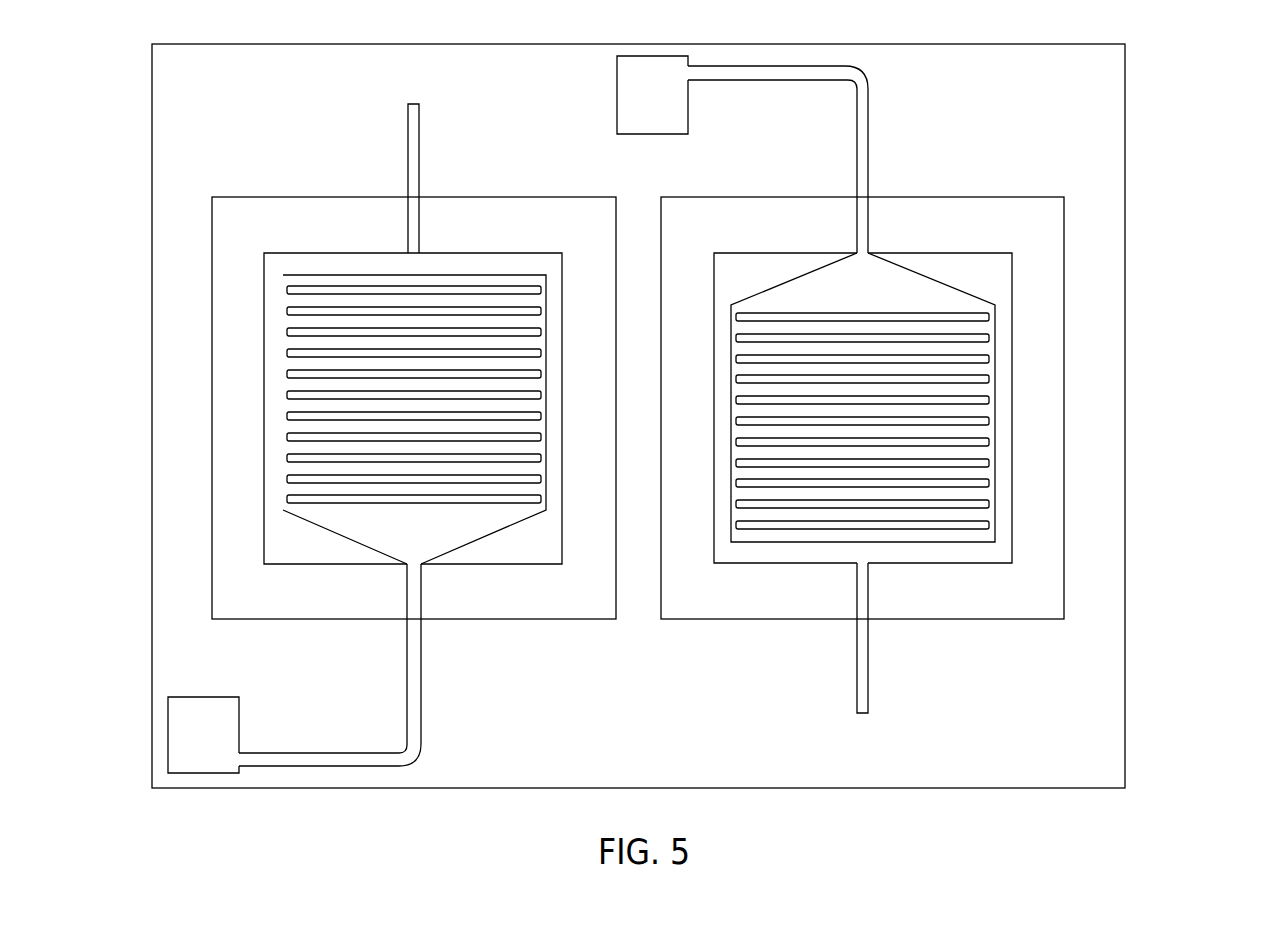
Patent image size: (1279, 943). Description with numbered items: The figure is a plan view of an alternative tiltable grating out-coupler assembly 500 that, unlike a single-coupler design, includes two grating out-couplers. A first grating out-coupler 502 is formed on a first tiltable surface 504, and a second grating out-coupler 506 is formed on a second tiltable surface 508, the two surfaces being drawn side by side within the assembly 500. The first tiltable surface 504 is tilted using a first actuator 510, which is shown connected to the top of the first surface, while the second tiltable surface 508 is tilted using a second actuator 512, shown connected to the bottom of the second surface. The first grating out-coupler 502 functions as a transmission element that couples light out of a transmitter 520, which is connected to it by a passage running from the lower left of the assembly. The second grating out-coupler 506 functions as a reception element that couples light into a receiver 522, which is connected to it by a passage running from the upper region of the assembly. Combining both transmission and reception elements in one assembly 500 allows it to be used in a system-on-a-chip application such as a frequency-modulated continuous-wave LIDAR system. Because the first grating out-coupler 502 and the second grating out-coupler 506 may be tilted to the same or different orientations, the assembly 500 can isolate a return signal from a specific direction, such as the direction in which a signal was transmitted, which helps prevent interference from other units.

The grating out-coupler assembly 500 is at (1187, 80).
The first grating out-coupler 502 is at (338, 275).
The first tiltable surface 504 is at (514, 263).
The second grating out-coupler 506 is at (898, 265).
The second tiltable surface 508 is at (982, 270).
The first actuator 510 is at (419, 159).
The second actuator 512 is at (869, 598).
The transmitter 520 is at (221, 740).
The receiver 522 is at (670, 99).